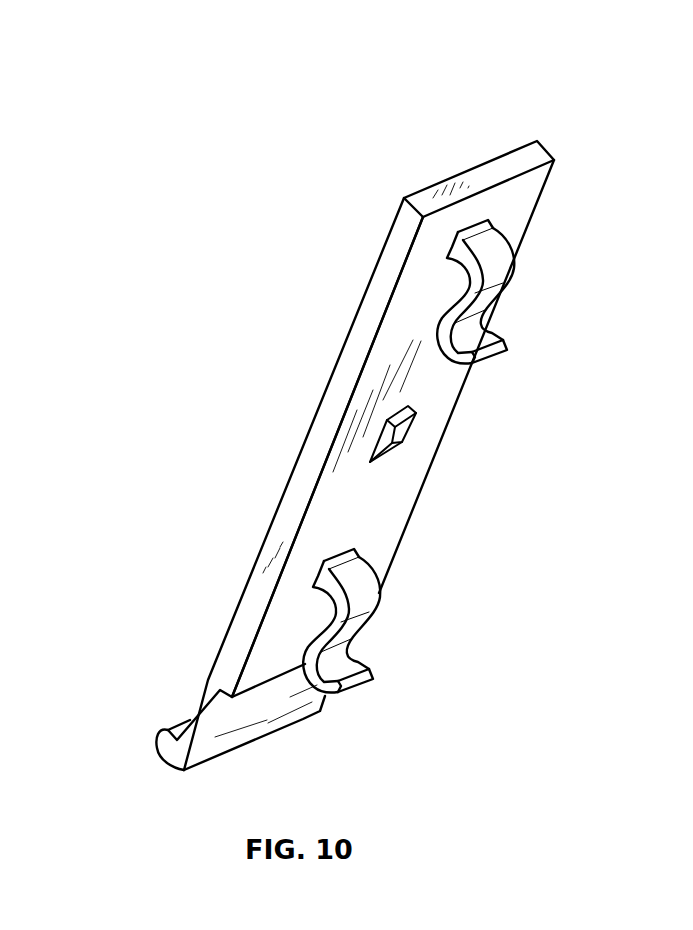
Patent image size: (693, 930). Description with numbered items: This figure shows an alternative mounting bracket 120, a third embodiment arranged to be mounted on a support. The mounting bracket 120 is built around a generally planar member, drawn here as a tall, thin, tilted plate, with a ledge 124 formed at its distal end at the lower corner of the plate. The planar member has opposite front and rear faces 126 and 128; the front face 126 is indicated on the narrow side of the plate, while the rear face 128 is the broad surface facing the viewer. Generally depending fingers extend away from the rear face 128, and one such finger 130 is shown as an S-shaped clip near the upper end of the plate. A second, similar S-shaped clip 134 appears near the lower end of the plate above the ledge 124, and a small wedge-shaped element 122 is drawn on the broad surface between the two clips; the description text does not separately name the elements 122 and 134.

The mounting bracket 120 is at (567, 124).
The plate body 122 is at (385, 515).
The ledge 124 is at (183, 730).
The front face 126 is at (298, 460).
The rear face 128 is at (407, 428).
The finger 130 is at (512, 247).
The lower S-clip 134 is at (380, 573).